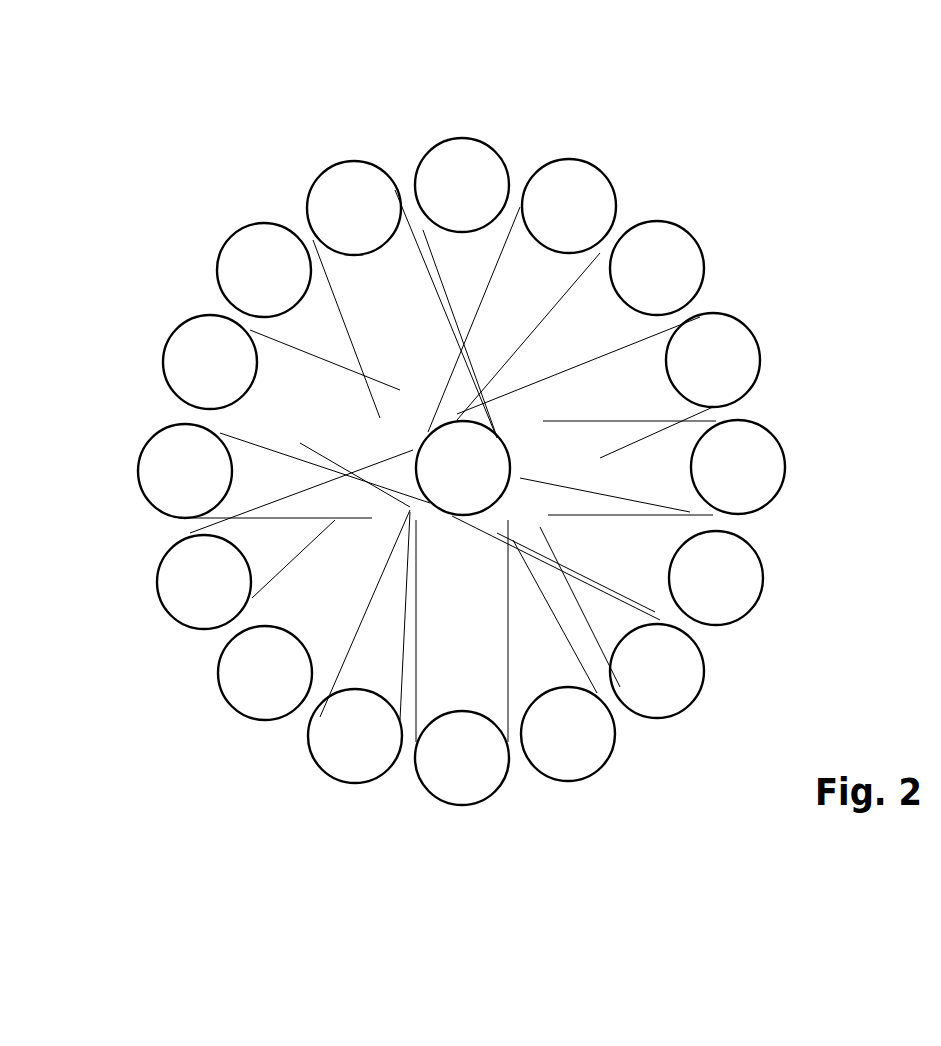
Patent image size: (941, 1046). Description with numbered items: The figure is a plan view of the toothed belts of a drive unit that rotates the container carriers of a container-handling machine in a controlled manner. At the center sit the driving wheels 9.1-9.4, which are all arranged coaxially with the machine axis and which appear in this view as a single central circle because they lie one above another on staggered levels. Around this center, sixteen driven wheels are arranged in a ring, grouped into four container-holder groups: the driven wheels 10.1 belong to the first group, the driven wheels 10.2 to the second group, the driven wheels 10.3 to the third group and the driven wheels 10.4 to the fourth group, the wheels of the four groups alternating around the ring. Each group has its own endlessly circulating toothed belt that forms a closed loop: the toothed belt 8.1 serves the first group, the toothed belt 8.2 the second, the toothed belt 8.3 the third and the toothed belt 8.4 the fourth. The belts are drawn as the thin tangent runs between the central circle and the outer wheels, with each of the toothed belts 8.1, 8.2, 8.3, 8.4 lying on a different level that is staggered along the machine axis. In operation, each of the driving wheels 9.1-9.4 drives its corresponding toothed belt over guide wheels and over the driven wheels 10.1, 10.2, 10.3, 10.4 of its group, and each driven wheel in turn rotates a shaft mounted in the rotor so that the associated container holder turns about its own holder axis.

The driven wheel 10.1 is at (682, 258).
The driven wheel 10.2 is at (728, 345).
The driven wheel 10.3 is at (474, 172).
The driven wheel 10.4 is at (577, 193).
The toothed belt 8.1 is at (320, 363).
The toothed belt 8.2 is at (522, 677).
The toothed belt 8.3 is at (320, 513).
The toothed belt 8.4 is at (473, 303).
The driving wheels 9.1-9.4 is at (480, 463).